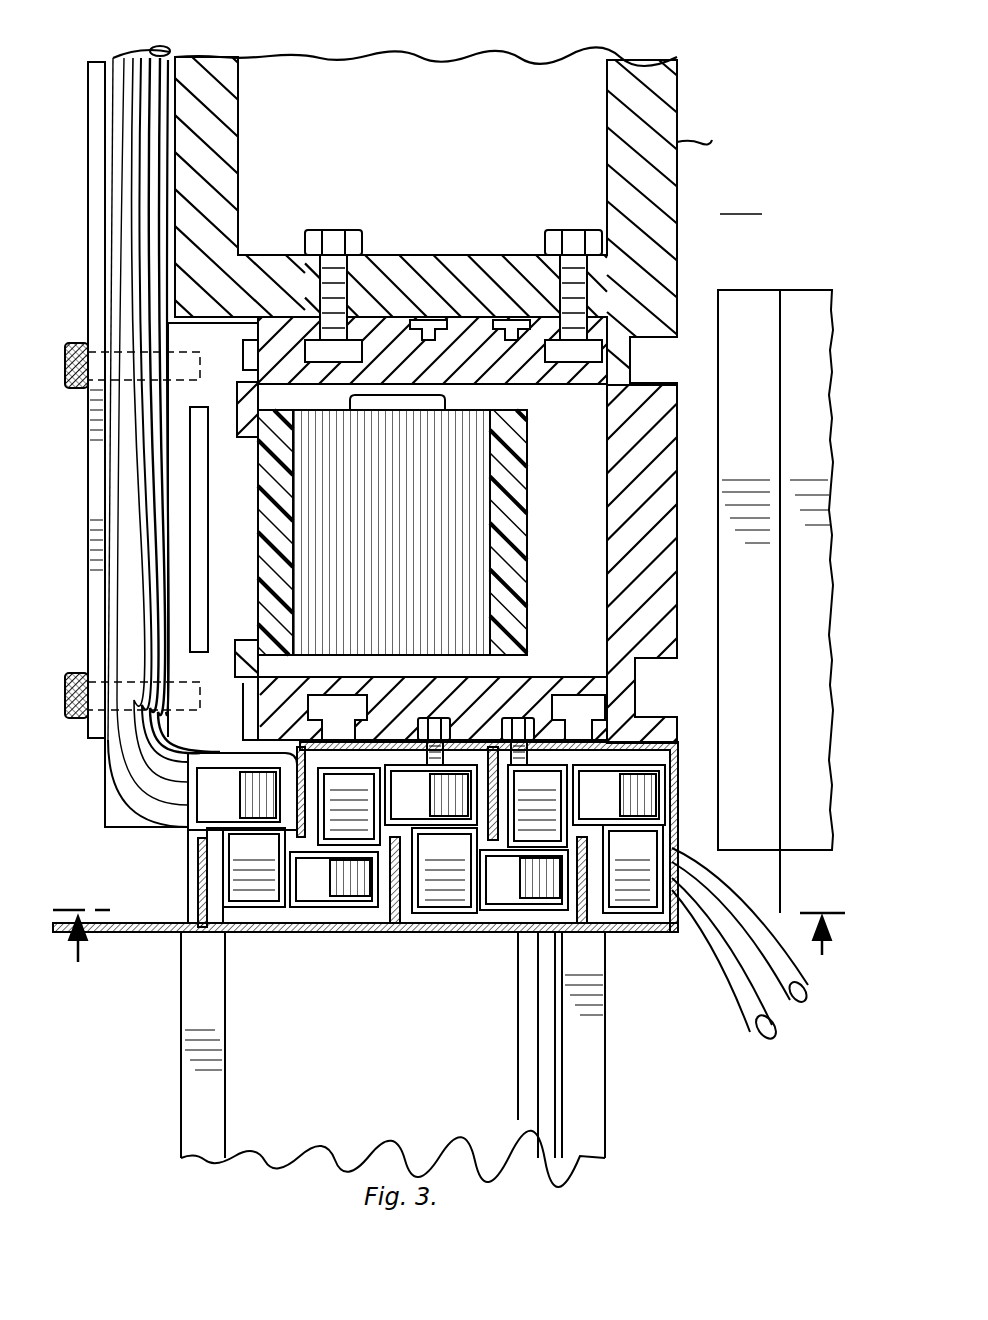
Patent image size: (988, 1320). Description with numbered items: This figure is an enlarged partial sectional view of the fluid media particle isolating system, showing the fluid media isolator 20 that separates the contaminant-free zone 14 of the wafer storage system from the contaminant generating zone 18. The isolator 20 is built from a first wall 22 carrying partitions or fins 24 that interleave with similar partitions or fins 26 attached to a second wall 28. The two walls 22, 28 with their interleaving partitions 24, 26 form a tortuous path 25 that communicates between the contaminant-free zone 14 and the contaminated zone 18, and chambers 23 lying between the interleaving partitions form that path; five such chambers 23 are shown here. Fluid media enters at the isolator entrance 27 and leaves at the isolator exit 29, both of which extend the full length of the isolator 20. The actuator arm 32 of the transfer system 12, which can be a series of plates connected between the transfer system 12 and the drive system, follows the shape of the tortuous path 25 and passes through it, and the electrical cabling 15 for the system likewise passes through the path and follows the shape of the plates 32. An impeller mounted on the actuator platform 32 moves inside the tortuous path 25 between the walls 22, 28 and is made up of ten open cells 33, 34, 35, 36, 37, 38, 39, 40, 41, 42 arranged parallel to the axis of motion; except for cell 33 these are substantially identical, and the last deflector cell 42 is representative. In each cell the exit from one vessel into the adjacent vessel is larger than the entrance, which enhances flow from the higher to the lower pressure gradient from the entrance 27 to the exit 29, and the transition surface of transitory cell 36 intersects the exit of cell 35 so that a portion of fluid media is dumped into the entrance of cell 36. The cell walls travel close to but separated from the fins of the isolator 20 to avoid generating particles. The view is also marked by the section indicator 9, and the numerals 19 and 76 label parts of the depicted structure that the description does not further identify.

The section line 9- 9 is at (449, 953).
The transfer system 12 is at (752, 292).
The contaminant-free zone 14 is at (736, 212).
The electrical cabling 15 is at (130, 556).
The contaminant generating zone 18 is at (56, 807).
The motor housing 19 is at (680, 148).
The fluid media isolator 20 is at (672, 932).
The first wall 22 is at (355, 902).
The chambers 23 is at (135, 757).
The partitions 24 is at (205, 885).
The tortuous path 25 is at (320, 896).
The partitions 26 is at (310, 776).
The isolator entrance 27 is at (212, 846).
The second wall 28 is at (640, 746).
The isolator exit 29 is at (722, 962).
The actuator arm 32 is at (765, 872).
The cell 33 is at (660, 846).
The cell 34 is at (660, 796).
The cell 35 is at (540, 780).
The transitory cell 36 is at (520, 887).
The cell 37 is at (456, 872).
The cell 38 is at (462, 786).
The cell 39 is at (335, 790).
The cell 40 is at (322, 892).
The cell 41 is at (252, 880).
The deflector cell 42 is at (250, 815).
The housing side wall 76 is at (668, 592).